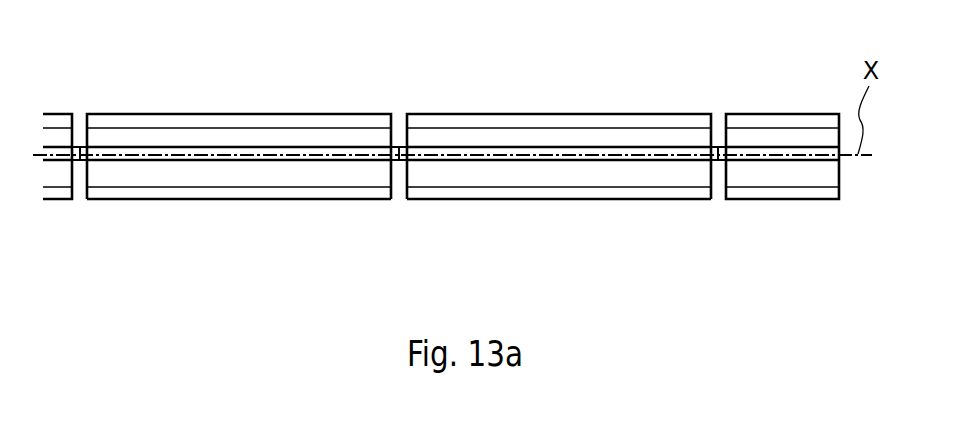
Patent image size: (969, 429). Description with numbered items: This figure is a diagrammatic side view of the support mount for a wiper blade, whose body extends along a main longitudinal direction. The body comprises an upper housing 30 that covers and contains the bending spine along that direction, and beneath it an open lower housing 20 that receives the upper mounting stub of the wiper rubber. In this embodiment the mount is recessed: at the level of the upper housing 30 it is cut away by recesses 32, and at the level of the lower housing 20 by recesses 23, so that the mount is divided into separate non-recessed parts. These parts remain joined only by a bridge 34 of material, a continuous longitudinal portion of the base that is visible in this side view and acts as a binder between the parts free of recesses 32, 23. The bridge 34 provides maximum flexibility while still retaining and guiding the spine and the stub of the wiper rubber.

The lower housing 20 is at (240, 182).
The upper housing 30 is at (240, 118).
The recesses 32 is at (420, 116).
The recesses 23 is at (704, 190).
The bridge of material 34 is at (396, 170).